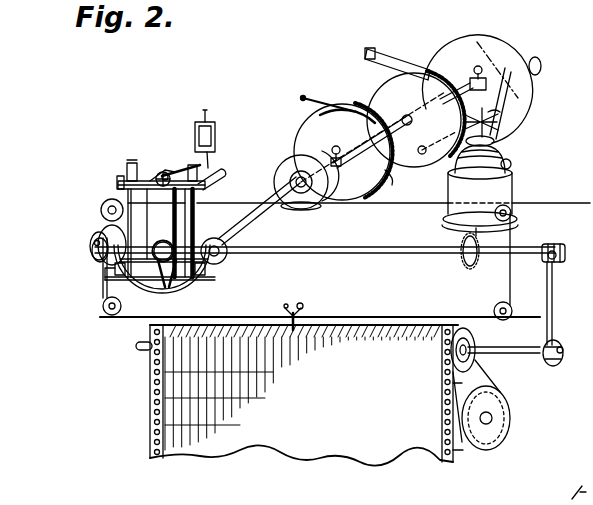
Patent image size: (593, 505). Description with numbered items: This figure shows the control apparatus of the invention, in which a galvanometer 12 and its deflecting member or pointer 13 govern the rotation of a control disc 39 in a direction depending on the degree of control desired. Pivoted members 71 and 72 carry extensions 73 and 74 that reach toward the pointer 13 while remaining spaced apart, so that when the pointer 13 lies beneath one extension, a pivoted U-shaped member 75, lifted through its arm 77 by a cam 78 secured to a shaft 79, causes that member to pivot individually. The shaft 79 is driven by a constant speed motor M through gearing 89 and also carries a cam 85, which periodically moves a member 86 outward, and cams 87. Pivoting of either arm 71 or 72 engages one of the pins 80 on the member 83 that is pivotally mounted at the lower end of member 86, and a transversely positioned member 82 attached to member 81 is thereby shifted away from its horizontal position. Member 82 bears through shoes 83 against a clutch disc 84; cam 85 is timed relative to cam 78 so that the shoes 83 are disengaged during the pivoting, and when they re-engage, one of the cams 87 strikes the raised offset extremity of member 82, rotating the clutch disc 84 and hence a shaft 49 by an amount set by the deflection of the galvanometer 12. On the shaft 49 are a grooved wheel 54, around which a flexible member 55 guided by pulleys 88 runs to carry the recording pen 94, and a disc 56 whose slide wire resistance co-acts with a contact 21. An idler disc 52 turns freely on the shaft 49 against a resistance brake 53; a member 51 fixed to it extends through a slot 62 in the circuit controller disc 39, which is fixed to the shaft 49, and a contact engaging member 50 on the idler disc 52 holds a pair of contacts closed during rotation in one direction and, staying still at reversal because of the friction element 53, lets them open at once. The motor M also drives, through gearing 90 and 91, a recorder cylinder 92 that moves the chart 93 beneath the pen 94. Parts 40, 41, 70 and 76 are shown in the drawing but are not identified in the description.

The galvanometer 12 is at (198, 124).
The deflecting member 13 is at (172, 172).
The contact 21 is at (318, 132).
The circuit controller disc 39 is at (441, 58).
The bracket 40 is at (500, 123).
The knob 41 is at (578, 49).
The shaft 49 is at (283, 200).
The contact engaging member 50 is at (493, 115).
The member 51 is at (485, 132).
The idler disc 52 is at (383, 102).
The resistance brake 53 is at (398, 50).
The grooved wheel 54 is at (318, 140).
The flexible member 55 is at (412, 206).
The disc 56 is at (296, 133).
The slot 62 is at (469, 86).
The pad 70 is at (394, 163).
The pivoted member 71 is at (128, 198).
The pivoted member 72 is at (196, 203).
The extension 73 is at (128, 159).
The extension 74 is at (214, 172).
The pivoted U-shaped member 75 is at (118, 183).
The arm 76 is at (157, 178).
The arm 77 is at (125, 238).
The cam 78 is at (92, 247).
The shaft 79 is at (287, 249).
The pins 80 is at (102, 295).
The member 81 is at (104, 282).
The transversely positioned member 82 is at (210, 288).
The shoes 83 is at (115, 270).
The clutch disc 84 is at (190, 294).
The cam 85 is at (95, 244).
The member 86 is at (101, 211).
The cams 87 is at (100, 241).
The pulleys 88 is at (110, 320).
The gearing 89 is at (478, 262).
The gearing 90 is at (565, 252).
The gearing 91 is at (554, 366).
The recorder cylinder 92 is at (470, 338).
The chart 93 is at (340, 452).
The recording pen 94 is at (302, 310).
The constant speed motor M is at (513, 191).